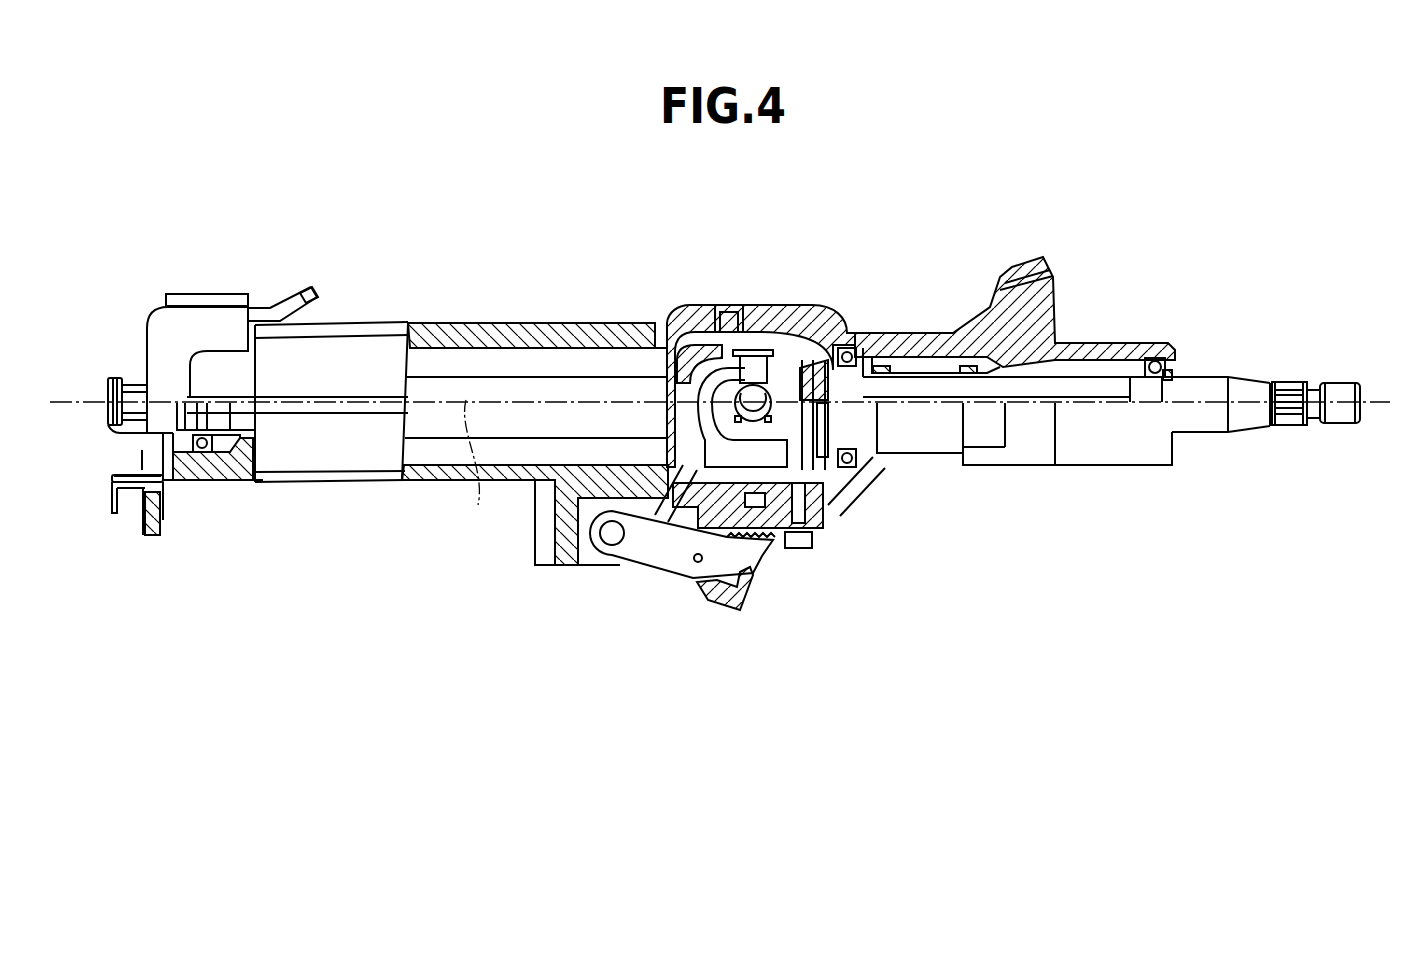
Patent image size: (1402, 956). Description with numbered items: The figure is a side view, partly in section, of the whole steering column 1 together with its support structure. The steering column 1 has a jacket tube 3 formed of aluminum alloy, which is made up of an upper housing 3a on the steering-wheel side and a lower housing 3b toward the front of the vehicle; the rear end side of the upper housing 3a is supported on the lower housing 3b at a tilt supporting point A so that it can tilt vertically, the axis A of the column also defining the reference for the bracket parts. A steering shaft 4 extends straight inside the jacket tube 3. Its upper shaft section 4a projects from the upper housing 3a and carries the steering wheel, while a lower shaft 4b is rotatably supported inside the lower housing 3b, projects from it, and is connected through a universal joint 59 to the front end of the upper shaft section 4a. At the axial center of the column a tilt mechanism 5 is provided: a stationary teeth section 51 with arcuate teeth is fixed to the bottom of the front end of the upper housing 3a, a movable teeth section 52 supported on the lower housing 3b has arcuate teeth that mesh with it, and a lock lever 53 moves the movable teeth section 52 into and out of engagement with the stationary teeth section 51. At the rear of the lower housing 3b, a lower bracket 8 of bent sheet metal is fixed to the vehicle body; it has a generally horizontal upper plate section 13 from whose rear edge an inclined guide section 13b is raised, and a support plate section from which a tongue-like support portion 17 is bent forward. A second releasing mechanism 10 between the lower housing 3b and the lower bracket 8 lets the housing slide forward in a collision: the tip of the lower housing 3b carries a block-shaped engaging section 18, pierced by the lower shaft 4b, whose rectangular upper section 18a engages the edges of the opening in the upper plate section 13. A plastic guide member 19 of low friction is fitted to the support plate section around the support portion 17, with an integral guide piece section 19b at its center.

The steering column 1 is at (906, 288).
The jacket tube 3 is at (545, 322).
The upper housing 3a is at (937, 340).
The lower housing 3b is at (468, 337).
The steering shaft 4 is at (1103, 372).
The upper shaft section 4a is at (1242, 374).
The lower shaft 4b is at (133, 387).
The tilt mechanism 5 is at (832, 312).
The lower bracket 8 is at (170, 336).
The second releasing mechanism 10 is at (233, 290).
The upper plate section 13 is at (272, 313).
The guide section 13b is at (313, 287).
The support portion 17 is at (147, 537).
The engaging section 18 is at (218, 468).
The upper section 18a is at (180, 298).
The guide member 19 is at (106, 495).
The guide piece section 19b is at (120, 475).
The stationary teeth section 51 is at (775, 542).
The movable teeth section 52 is at (633, 574).
The lock lever 53 is at (722, 602).
The universal joint 59 is at (778, 328).
The tilt supporting point A is at (465, 470).